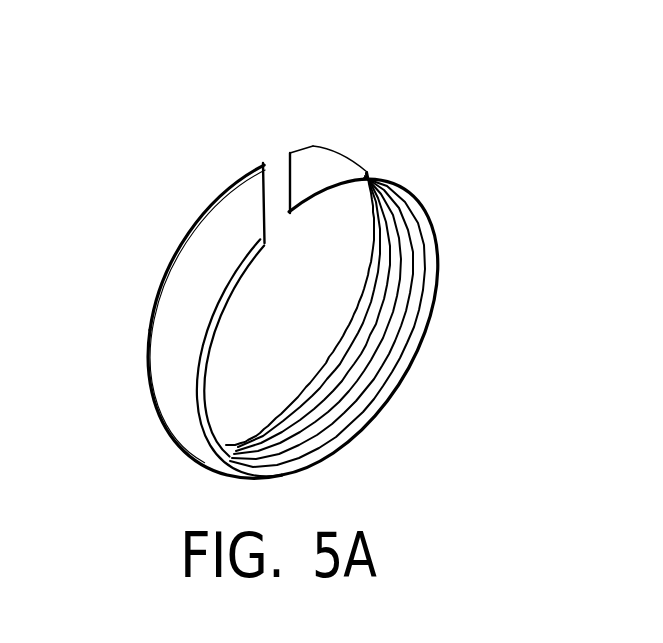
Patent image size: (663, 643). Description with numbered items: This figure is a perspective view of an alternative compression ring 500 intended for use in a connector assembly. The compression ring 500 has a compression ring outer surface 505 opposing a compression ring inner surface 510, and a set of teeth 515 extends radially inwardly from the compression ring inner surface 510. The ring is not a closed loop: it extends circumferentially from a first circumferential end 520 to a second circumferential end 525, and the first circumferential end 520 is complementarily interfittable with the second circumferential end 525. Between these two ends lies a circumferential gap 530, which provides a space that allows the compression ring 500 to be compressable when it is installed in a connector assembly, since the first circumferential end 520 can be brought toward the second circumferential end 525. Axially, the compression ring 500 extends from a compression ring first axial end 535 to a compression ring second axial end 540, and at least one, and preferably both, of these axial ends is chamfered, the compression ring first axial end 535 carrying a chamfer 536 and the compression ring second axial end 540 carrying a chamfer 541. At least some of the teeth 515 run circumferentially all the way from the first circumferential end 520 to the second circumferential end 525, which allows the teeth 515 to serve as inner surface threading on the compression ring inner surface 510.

The compression ring 500 is at (486, 100).
The compression ring outer surface 505 is at (323, 167).
The compression ring inner surface 510 is at (408, 250).
The set of teeth 515 is at (380, 363).
The first circumferential end 520 is at (274, 163).
The second circumferential end 525 is at (288, 152).
The circumferential gap 530 is at (277, 193).
The compression ring first axial end 535 is at (222, 450).
The chamfer 536 is at (222, 302).
The compression ring second axial end 540 is at (164, 424).
The chamfer 541 is at (180, 251).